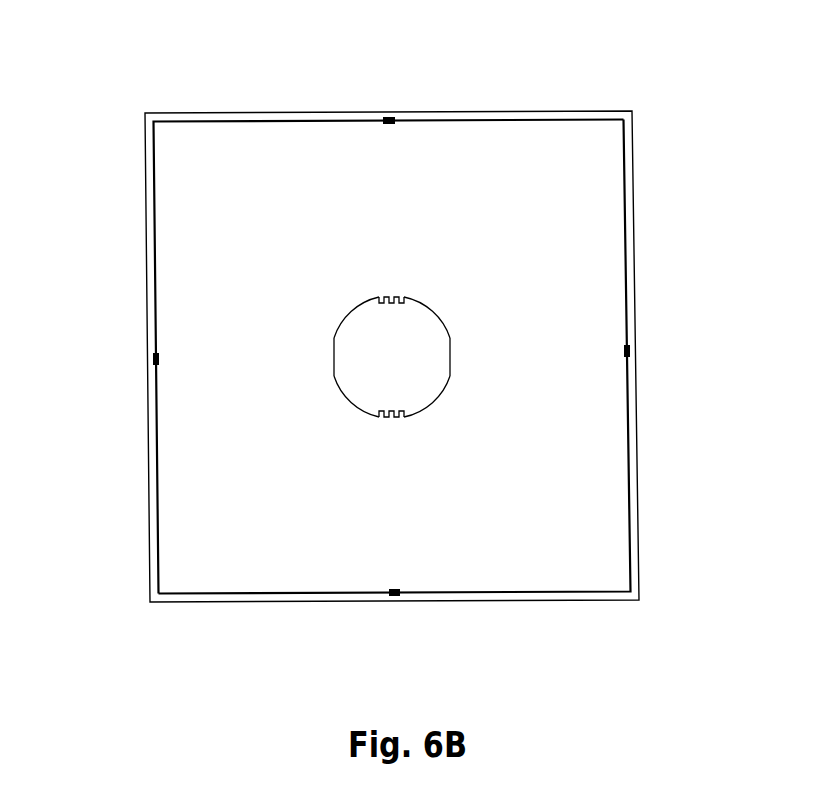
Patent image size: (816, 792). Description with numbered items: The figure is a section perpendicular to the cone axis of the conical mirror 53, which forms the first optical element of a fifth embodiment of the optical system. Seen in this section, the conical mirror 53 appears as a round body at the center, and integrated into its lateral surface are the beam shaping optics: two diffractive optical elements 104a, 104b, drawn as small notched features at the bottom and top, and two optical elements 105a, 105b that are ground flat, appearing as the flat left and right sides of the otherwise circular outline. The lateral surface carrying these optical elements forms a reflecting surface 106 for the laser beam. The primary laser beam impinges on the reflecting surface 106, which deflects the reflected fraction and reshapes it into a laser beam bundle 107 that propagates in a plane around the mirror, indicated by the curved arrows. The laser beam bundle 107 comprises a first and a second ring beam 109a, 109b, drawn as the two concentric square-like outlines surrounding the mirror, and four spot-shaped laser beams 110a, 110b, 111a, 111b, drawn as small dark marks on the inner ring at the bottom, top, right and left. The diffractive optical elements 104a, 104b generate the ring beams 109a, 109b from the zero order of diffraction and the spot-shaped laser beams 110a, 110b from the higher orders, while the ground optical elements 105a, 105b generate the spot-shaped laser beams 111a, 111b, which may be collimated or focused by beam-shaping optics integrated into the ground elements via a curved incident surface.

The first optical element 53 is at (404, 370).
The diffractive optical element 104a is at (390, 417).
The diffractive optical element 104b is at (390, 297).
The optical element that is ground flat 105a is at (451, 360).
The optical element that is ground flat 105b is at (333, 357).
The reflecting surface 106 is at (336, 321).
The laser beam bundle 107 is at (583, 154).
The first ring beam 109a is at (523, 590).
The second ring beam 109b is at (274, 122).
The spot-shaped laser beam 110a is at (395, 597).
The spot-shaped laser beam 110b is at (388, 117).
The spot-shaped laser beam 111a is at (630, 351).
The spot-shaped laser beam 111b is at (153, 358).